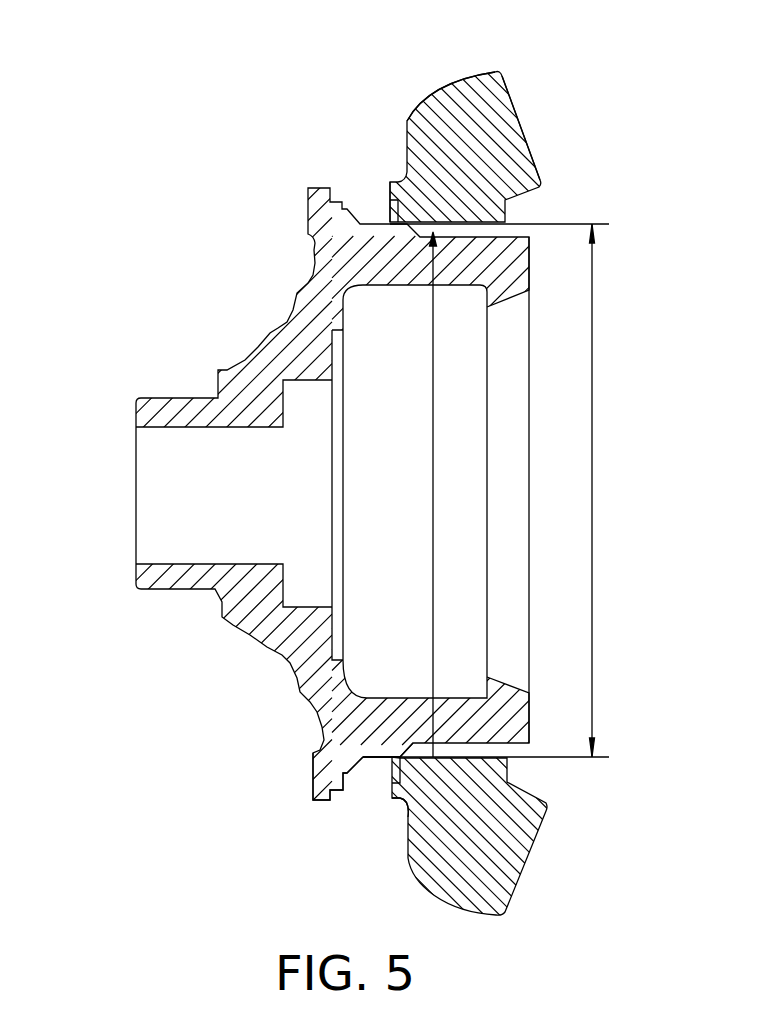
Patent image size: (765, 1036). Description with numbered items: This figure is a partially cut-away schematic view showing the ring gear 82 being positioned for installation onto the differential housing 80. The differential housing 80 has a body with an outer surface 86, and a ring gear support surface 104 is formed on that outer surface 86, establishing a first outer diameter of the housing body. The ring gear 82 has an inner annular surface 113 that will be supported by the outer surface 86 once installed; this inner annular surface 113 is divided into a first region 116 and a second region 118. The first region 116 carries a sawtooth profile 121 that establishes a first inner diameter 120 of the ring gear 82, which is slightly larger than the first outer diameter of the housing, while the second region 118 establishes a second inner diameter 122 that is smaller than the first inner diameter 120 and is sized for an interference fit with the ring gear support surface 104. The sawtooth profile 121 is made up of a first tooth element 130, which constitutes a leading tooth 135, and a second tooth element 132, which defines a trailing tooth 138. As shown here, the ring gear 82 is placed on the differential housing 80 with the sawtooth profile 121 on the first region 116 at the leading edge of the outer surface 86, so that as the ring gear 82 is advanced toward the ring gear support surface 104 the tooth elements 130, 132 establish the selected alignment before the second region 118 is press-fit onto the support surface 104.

The differential housing 80 is at (162, 292).
The ring gear 82 is at (410, 74).
The outer surface 86 is at (388, 762).
The ring gear support surface 104 is at (147, 582).
The inner annular surface 113 is at (457, 236).
The first region 116 is at (410, 775).
The second region 118 is at (462, 760).
The first inner diameter 120 is at (433, 443).
The sawtooth profile 121 is at (449, 729).
The second inner diameter 122 is at (595, 458).
The first tooth element 130 is at (414, 200).
The second tooth element 132 is at (433, 201).
The leading tooth 135 is at (383, 222).
The trailing tooth 138 is at (434, 736).